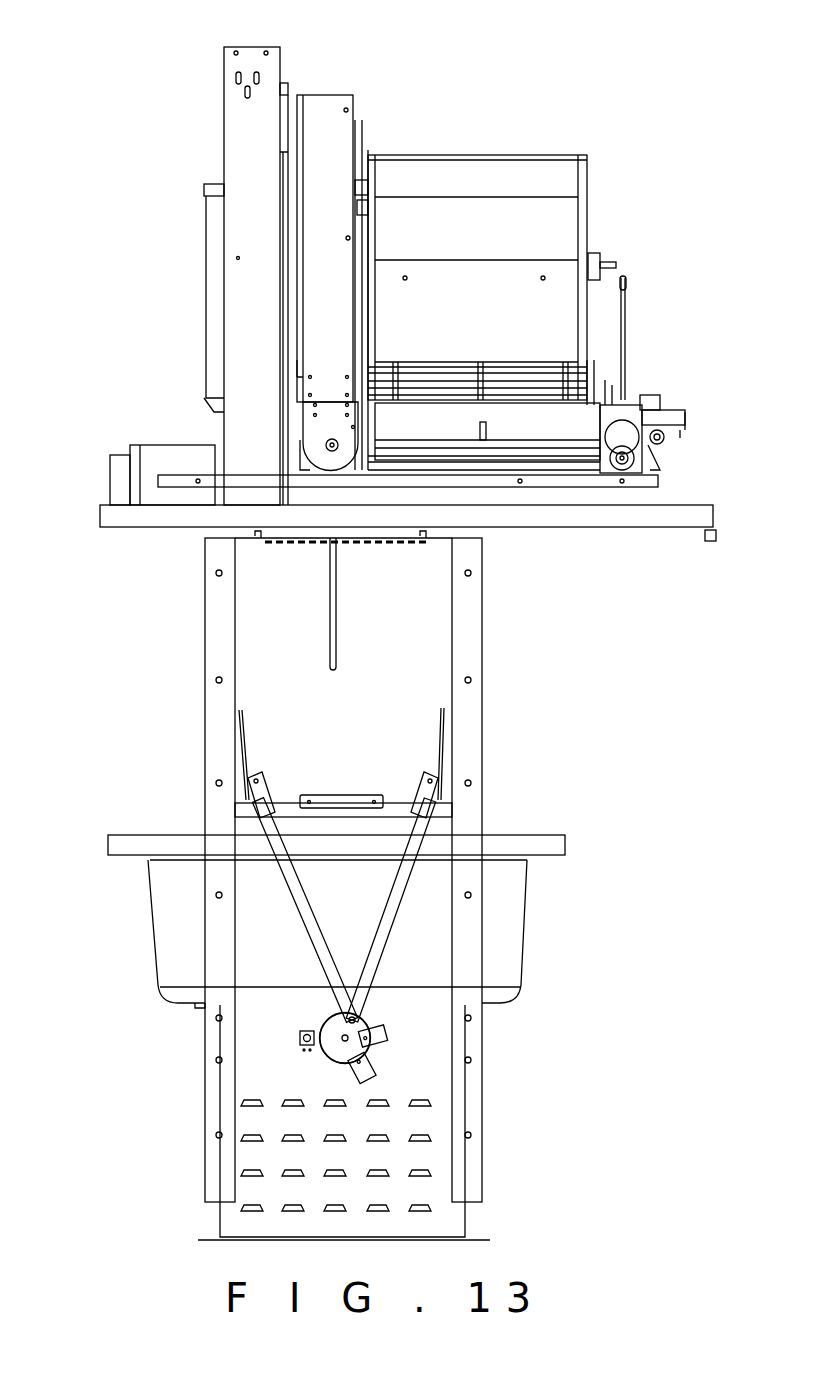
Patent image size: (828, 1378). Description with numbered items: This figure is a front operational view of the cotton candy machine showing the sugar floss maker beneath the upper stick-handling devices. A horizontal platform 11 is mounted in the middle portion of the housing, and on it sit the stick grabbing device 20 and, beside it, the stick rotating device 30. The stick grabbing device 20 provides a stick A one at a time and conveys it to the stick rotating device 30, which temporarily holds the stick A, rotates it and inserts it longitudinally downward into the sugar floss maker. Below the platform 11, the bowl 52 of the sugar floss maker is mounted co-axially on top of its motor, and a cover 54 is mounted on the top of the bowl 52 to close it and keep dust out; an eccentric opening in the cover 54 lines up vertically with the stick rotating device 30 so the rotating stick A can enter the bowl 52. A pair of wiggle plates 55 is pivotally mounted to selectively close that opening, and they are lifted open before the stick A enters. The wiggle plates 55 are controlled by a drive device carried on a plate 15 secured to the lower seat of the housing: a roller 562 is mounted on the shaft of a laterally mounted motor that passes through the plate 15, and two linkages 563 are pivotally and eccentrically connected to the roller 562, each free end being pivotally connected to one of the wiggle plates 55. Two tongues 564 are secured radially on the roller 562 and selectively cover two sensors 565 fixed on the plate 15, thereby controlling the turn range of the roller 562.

The stick grabbing device 20 is at (468, 146).
The stick rotating device 30 is at (186, 268).
The platform 11 is at (663, 515).
The stick A is at (336, 597).
The wiggle plates 55 is at (443, 742).
The cover 54 is at (555, 843).
The bowl 52 is at (510, 917).
The linkages 563 is at (375, 955).
The tongues 564 is at (370, 1033).
The plate 15 is at (385, 1060).
The roller 562 is at (325, 1030).
The sensors 565 is at (296, 1042).